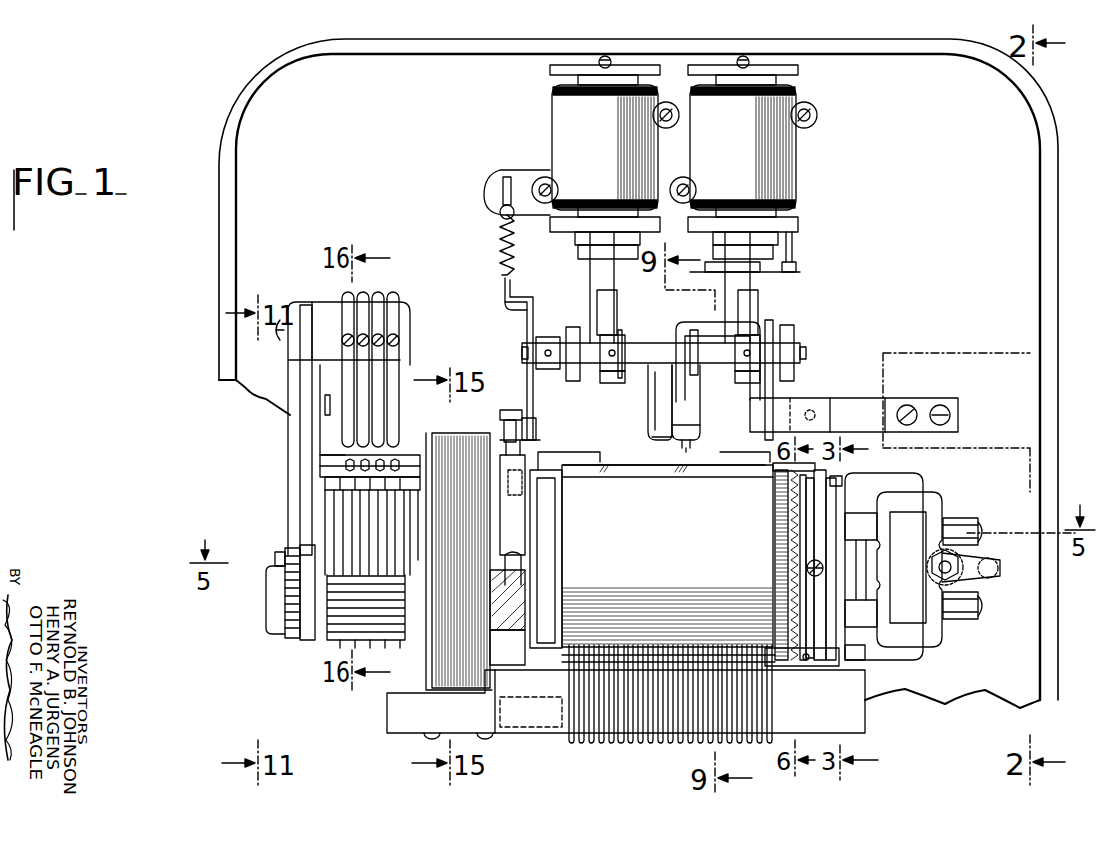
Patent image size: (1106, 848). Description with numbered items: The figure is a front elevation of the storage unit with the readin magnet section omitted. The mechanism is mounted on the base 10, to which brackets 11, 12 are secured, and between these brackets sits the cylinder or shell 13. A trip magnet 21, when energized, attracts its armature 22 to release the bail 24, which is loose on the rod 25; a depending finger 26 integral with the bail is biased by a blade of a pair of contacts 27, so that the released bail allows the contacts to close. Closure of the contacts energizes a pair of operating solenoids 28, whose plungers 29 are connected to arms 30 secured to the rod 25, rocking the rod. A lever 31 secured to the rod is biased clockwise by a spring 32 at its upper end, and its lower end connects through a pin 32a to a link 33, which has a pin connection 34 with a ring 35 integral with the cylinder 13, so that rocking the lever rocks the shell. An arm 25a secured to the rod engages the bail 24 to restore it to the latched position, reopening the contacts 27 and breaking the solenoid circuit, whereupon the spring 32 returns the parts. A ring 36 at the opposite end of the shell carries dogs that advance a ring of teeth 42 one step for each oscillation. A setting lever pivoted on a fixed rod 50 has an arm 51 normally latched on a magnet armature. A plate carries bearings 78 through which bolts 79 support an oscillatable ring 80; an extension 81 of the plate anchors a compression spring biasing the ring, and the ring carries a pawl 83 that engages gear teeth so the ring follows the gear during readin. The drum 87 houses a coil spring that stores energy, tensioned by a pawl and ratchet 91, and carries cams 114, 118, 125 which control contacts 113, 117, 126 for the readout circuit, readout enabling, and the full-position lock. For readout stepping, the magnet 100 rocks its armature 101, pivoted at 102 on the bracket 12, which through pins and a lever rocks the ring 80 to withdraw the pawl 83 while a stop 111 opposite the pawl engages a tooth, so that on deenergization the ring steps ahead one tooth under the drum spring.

The base 10 is at (1037, 248).
The bracket 11 is at (508, 617).
The bracket 12 is at (863, 478).
The cylinder or shell 13 is at (655, 549).
The trip magnet 21 is at (697, 400).
The armature 22 is at (662, 405).
The bail 24 is at (707, 322).
The rod 25 is at (645, 350).
The arm 25a is at (692, 337).
The finger 26 is at (775, 402).
The pair of contacts 27 is at (752, 420).
The operating solenoids 28 is at (674, 164).
The plungers 29 is at (590, 291).
The arms 30 is at (765, 358).
The lever 31 is at (506, 298).
The spring 32 is at (500, 240).
The pin 32a is at (538, 426).
The link 33 is at (508, 436).
The pin connection 34 is at (508, 487).
The ring 35 is at (546, 559).
The ring 36 is at (775, 507).
The ring of teeth 42 is at (778, 530).
The fixed rod 50 is at (538, 688).
The arm 51 is at (685, 740).
The bearings 78 is at (786, 565).
The bolts 79 is at (780, 545).
The ring 80 is at (826, 640).
The extension 81 is at (830, 480).
The pawl 83 is at (780, 478).
The drum 87 is at (449, 561).
The tensioning pawl and ratchet 91 is at (288, 594).
The magnet 100 is at (930, 640).
The armature 101 is at (908, 618).
The pivot 102 is at (864, 573).
The stop 111 is at (800, 640).
The pair of contacts 113 is at (327, 395).
The cam 114 is at (330, 495).
The contacts 117 is at (345, 395).
The cam 118 is at (345, 505).
The cam 125 is at (380, 522).
The pair of contacts 126 is at (385, 410).